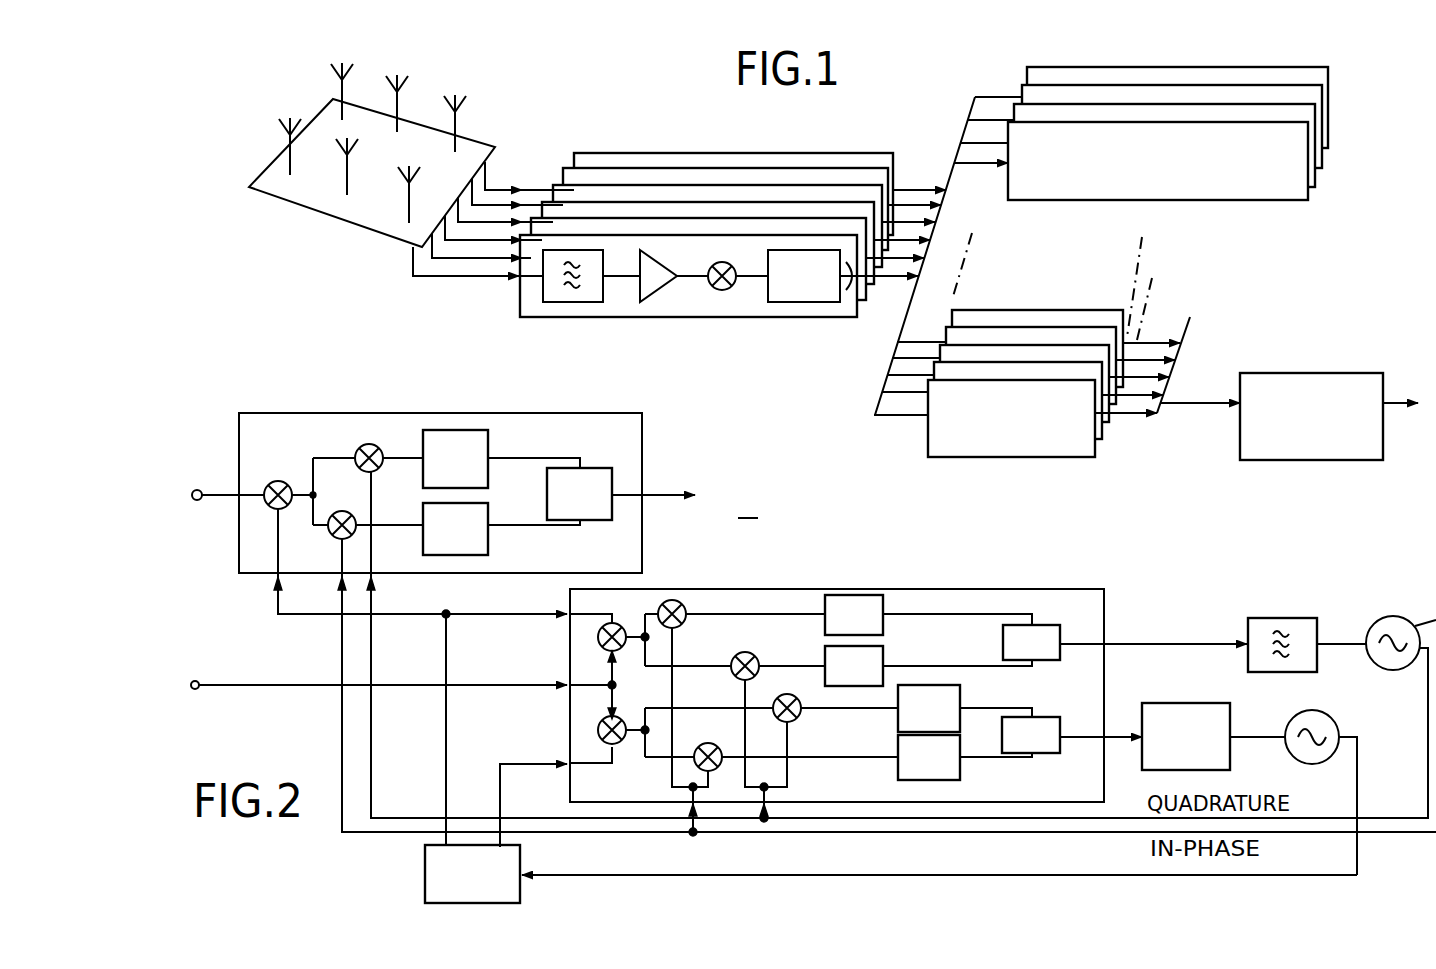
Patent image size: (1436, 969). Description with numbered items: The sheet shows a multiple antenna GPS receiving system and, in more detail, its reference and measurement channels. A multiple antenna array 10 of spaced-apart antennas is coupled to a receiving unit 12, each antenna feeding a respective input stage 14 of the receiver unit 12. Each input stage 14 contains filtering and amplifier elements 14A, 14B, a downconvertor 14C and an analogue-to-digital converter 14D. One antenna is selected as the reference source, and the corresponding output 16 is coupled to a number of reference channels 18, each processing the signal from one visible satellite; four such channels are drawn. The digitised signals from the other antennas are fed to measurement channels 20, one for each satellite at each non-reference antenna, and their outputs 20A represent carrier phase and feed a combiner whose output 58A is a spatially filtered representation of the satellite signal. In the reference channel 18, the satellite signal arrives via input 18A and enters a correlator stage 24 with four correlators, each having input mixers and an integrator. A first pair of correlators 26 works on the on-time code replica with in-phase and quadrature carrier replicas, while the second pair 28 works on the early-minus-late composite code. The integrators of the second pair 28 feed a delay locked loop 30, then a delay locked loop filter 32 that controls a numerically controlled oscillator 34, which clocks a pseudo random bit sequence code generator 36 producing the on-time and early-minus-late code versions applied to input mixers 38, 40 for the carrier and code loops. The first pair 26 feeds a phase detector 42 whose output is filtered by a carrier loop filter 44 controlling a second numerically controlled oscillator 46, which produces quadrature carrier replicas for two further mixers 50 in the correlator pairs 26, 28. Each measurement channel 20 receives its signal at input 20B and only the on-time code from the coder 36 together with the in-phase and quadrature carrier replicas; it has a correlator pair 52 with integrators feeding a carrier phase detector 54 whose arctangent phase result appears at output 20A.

In FIG. 1, the multiple antenna array 10 is at (453, 78).
In FIG. 1, the receiving unit 12 is at (796, 384).
In FIG. 1, the input stage 14 is at (653, 240).
In FIG. 1, the filtering element 14A is at (565, 303).
In FIG. 1, the amplifier element 14B is at (656, 298).
In FIG. 1, the downconvertor 14C is at (722, 292).
In FIG. 1, the analogue-to-digital converter 14D is at (804, 303).
In FIG. 1, the output 16 is at (925, 165).
In FIG. 1, the reference channel 18 is at (1200, 62).
In FIG. 2, the reference channel 18 is at (1186, 588).
In FIG. 2, the input 18A is at (198, 682).
In FIG. 1, the measurement channel 20 is at (1045, 300).
In FIG. 2, the measurement channel 20 is at (819, 604).
In FIG. 1, the output 20A is at (1178, 305).
In FIG. 2, the output 20A is at (665, 488).
In FIG. 2, the measurement channel input 20B is at (212, 490).
In FIG. 2, the correlator stage 24 is at (858, 698).
In FIG. 2, the first pair of correlators 26 is at (803, 657).
In FIG. 2, the second pair of correlators 28 is at (850, 754).
In FIG. 2, the delay locked loop 30 is at (1050, 717).
In FIG. 2, the delay locked loop filter 32 is at (1200, 703).
In FIG. 2, the numerically controlled oscillator 34 is at (1311, 765).
In FIG. 2, the pseudo random bit sequence code generator 36 is at (425, 873).
In FIG. 2, the input mixer 38 is at (599, 645).
In FIG. 2, the input mixer 40 is at (599, 736).
In FIG. 2, the phase detector 42 is at (1050, 625).
In FIG. 2, the carrier loop filter 44 is at (1320, 618).
In FIG. 2, the second numerically controlled oscillator 46 is at (1385, 668).
In FIG. 2, the further mixers 50 is at (720, 702).
In FIG. 1, the correlator pair 52 is at (1320, 373).
In FIG. 2, the correlator pair 52 is at (412, 504).
In FIG. 2, the carrier phase detector 54 is at (598, 468).
In FIG. 1, the combiner output 58A is at (1392, 398).